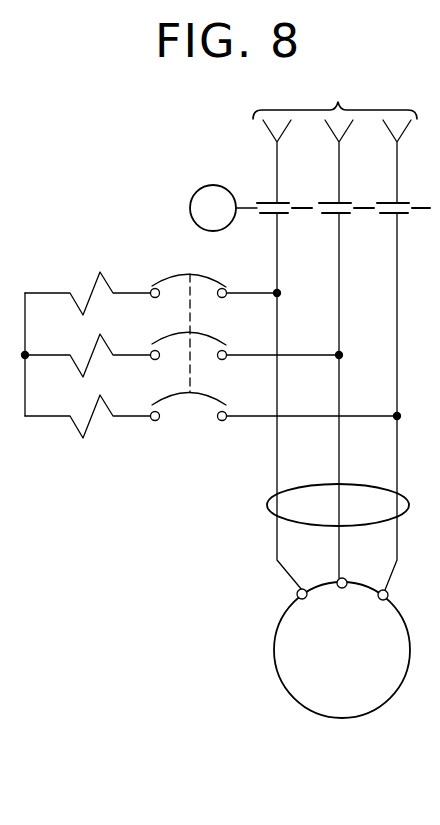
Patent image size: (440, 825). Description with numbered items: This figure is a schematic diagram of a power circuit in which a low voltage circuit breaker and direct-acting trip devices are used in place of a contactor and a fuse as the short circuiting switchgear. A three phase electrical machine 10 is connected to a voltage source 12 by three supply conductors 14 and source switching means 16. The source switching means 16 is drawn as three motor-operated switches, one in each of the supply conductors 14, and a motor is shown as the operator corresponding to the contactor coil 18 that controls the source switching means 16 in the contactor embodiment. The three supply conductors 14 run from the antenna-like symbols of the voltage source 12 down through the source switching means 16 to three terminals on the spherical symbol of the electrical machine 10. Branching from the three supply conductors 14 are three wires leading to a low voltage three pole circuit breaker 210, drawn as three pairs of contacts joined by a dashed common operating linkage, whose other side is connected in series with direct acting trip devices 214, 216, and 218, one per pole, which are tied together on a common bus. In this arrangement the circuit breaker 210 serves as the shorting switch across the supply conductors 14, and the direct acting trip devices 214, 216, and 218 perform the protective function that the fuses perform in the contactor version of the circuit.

The three phase electrical machine 10 is at (325, 717).
The voltage source 12 is at (335, 137).
The supply conductors 14 is at (268, 506).
The source switching means 16 is at (282, 217).
The contactor coil 18 is at (196, 192).
The low voltage three pole circuit breaker 210 is at (197, 396).
The direct acting trip device 214 is at (82, 290).
The direct acting trip device 216 is at (83, 353).
The direct acting trip device 218 is at (85, 412).